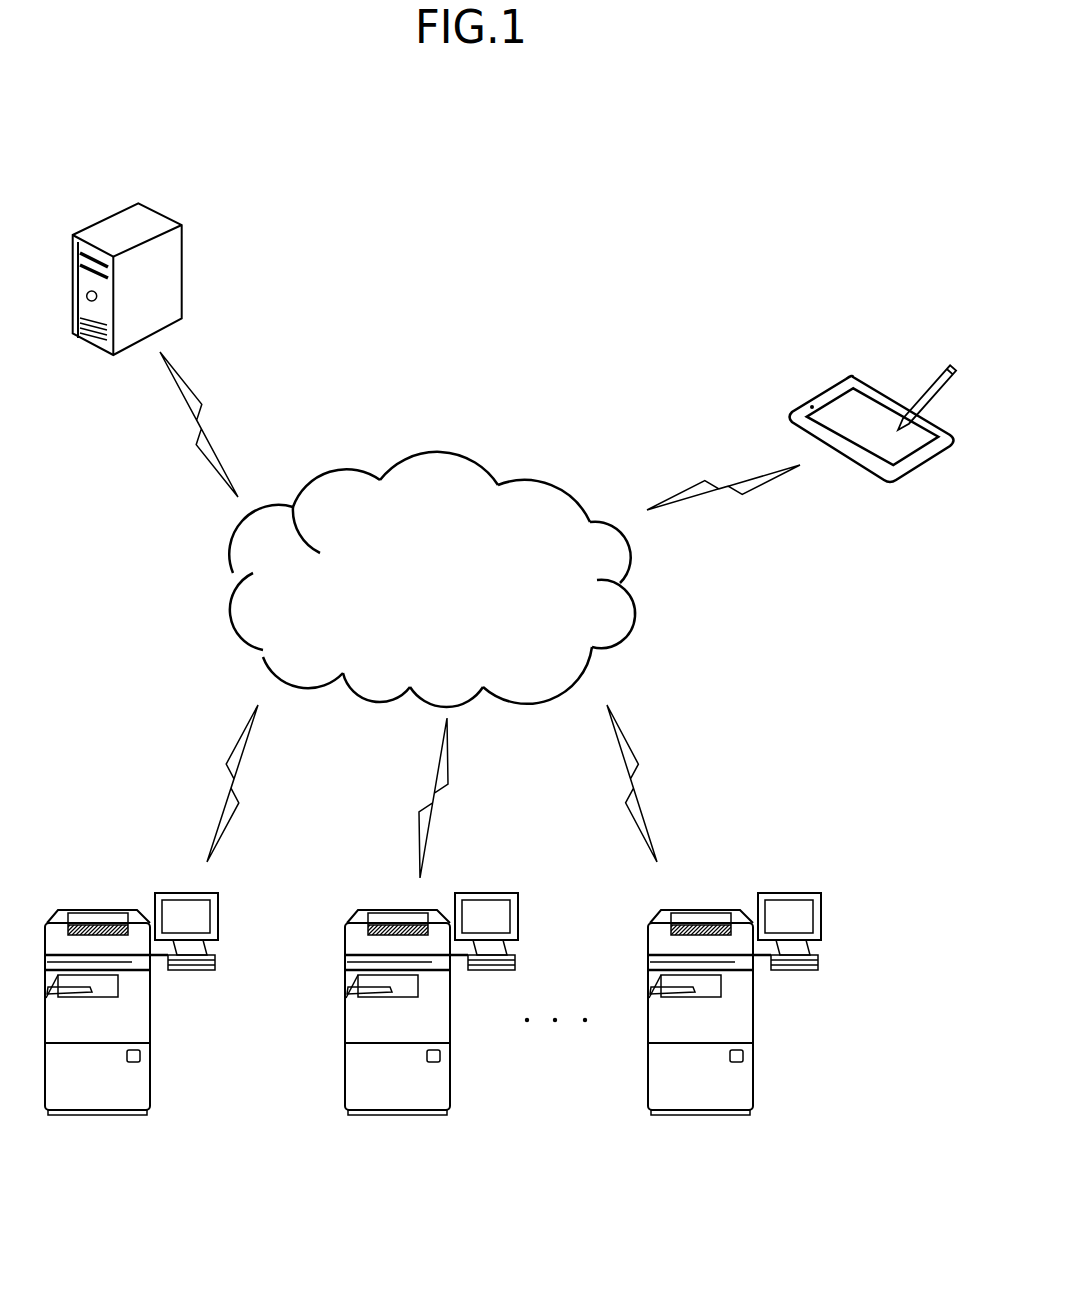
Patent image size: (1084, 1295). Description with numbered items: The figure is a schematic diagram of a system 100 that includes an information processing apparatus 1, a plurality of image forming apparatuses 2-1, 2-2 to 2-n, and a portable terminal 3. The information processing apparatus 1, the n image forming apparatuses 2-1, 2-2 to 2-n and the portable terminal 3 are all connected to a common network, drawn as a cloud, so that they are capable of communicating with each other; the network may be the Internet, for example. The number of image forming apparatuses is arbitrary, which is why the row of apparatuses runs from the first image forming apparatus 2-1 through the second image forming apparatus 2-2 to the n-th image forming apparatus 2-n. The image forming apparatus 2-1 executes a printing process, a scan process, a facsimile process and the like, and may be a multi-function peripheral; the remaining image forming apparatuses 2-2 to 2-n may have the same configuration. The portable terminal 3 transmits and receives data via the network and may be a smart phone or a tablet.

The system 100 is at (714, 229).
The information processing apparatus 1 is at (103, 217).
The portable terminal 3 is at (827, 387).
The image forming apparatus 2-1 is at (97, 1113).
The image forming apparatus 2-2 is at (397, 1113).
The image forming apparatus 2-n is at (702, 1115).